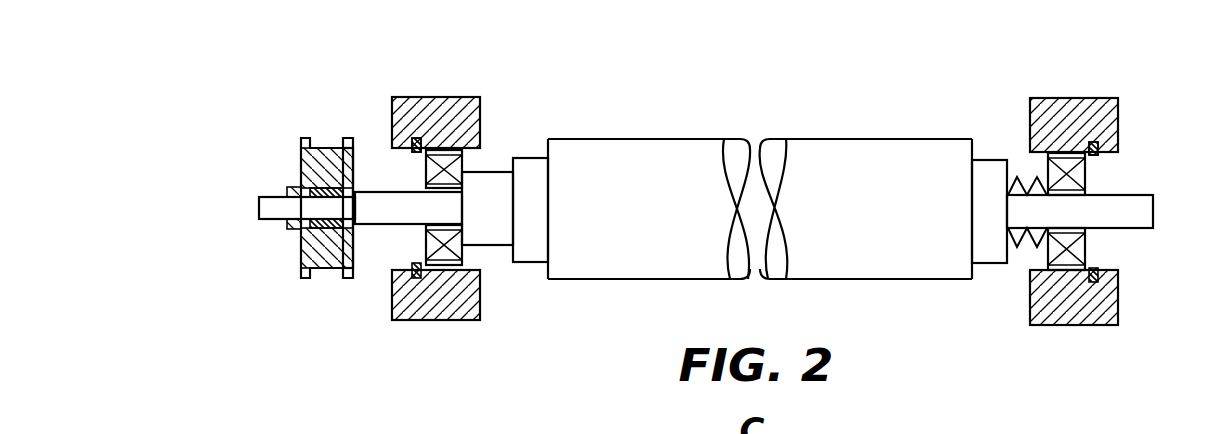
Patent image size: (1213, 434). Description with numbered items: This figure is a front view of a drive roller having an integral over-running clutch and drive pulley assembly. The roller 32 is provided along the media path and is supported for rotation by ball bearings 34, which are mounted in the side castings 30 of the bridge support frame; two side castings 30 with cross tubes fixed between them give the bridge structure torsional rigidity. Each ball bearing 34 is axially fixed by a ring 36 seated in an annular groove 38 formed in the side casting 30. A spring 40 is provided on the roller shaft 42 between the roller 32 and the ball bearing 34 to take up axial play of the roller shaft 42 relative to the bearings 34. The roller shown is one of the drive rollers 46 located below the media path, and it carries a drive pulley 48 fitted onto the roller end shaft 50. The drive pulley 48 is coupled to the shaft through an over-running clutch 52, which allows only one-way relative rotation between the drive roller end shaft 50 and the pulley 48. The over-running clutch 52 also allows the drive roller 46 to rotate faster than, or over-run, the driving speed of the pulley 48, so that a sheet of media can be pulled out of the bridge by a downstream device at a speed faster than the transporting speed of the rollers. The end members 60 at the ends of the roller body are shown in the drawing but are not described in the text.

The side casting 30 is at (424, 116).
The roller 32 is at (638, 140).
The ball bearing 34 is at (464, 167).
The ring 36 is at (415, 152).
The annular groove 38 is at (412, 145).
The spring 40 is at (1022, 183).
The roller shaft 42 is at (1123, 230).
The drive roller 46 is at (865, 140).
The drive pulley 48 is at (300, 256).
The roller end shaft 50 is at (276, 219).
The over-running clutch 52 is at (353, 250).
The end cap 60 is at (533, 263).